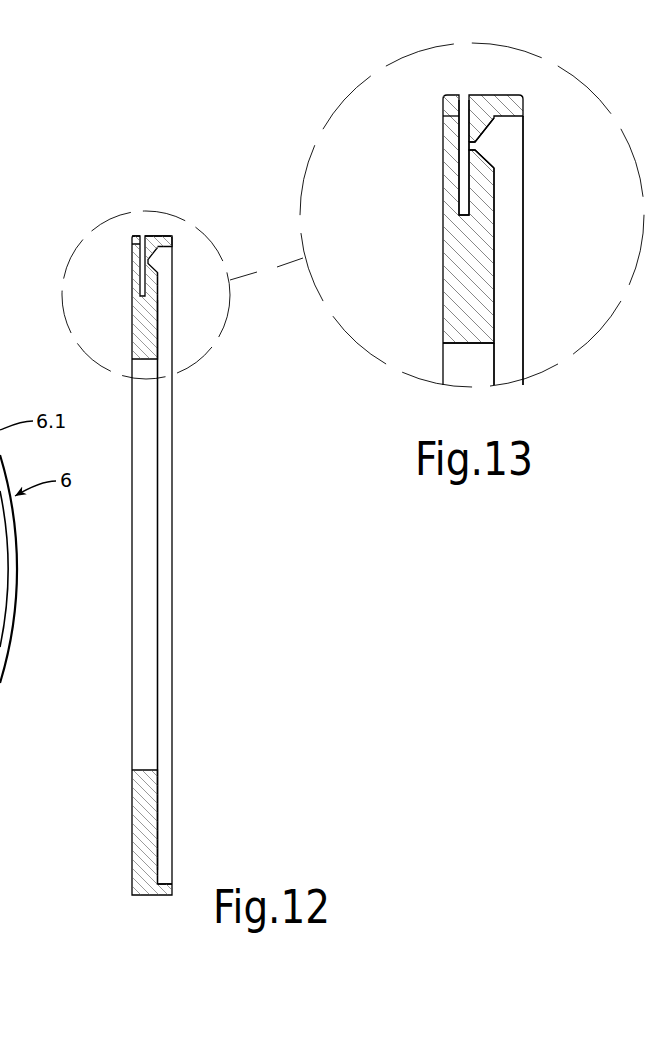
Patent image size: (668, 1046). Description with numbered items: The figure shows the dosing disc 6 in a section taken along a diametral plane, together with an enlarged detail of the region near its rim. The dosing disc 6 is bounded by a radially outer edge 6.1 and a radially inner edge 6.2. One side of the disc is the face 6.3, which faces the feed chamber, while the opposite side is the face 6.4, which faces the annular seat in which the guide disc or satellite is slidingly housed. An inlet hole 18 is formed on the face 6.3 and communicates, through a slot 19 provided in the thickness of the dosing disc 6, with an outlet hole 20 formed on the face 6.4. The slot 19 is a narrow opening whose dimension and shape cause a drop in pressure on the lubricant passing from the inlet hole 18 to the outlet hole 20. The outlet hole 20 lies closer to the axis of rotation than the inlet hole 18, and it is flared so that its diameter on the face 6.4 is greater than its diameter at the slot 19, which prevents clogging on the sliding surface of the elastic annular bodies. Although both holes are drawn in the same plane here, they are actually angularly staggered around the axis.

In FIG. 12, the dosing disc 6 is at (194, 809).
In FIG. 13, the dosing disc 6 is at (418, 289).
In FIG. 12, the radially outer edge 6.1 is at (152, 899).
In FIG. 13, the radially outer edge 6.1 is at (503, 91).
In FIG. 12, the radially inner edge 6.2 is at (152, 767).
In FIG. 13, the radially inner edge 6.2 is at (470, 348).
In FIG. 12, the face of the dosing disc facing the feed chamber 6.3 is at (130, 302).
In FIG. 13, the face of the dosing disc facing the feed chamber 6.3 is at (441, 257).
In FIG. 12, the face of the dosing disc facing the annular seat 6.4 is at (161, 315).
In FIG. 13, the face of the dosing disc facing the annular seat 6.4 is at (498, 254).
In FIG. 13, the inlet hole 18 is at (447, 116).
In FIG. 13, the slot 19 is at (465, 167).
In FIG. 13, the outlet hole 20 is at (489, 150).